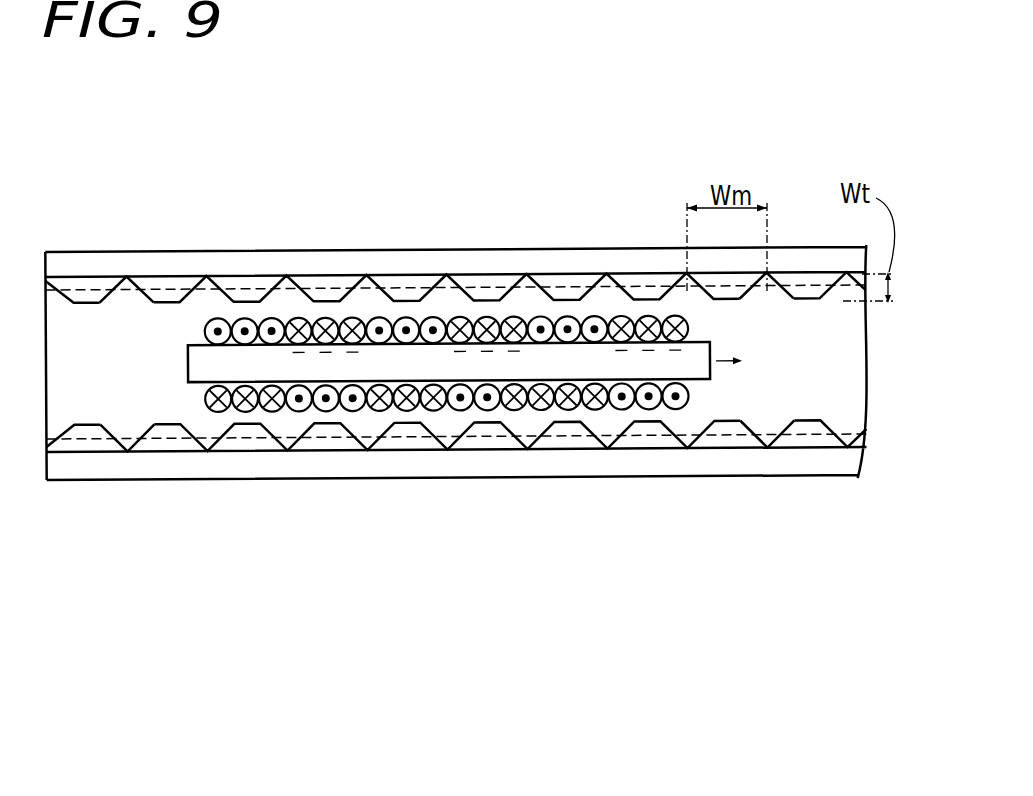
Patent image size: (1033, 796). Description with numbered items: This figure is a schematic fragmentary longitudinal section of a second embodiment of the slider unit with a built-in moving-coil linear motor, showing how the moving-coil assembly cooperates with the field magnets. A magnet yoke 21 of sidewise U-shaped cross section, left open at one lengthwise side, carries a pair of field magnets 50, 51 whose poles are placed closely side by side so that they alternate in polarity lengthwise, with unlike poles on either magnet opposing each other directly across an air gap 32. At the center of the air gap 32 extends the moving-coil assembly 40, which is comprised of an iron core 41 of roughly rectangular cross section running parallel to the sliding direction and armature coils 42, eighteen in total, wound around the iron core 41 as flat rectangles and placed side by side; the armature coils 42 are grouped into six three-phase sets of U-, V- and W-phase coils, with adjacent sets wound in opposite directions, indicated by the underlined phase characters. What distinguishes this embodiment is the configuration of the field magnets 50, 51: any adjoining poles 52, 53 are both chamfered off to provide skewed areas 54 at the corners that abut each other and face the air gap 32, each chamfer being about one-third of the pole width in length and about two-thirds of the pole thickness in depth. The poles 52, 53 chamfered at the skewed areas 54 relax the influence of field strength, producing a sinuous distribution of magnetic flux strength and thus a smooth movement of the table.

The magnet yoke 21 is at (520, 265).
The air gap 32 is at (431, 368).
The moving-coil assembly 40 is at (447, 433).
The iron core 41 is at (200, 360).
The armature coils 42 is at (527, 461).
The field magnet 50 is at (455, 276).
The field magnet 51 is at (456, 456).
The pole 52 is at (77, 306).
The pole 53 is at (93, 425).
The skewed areas 54 is at (140, 305).